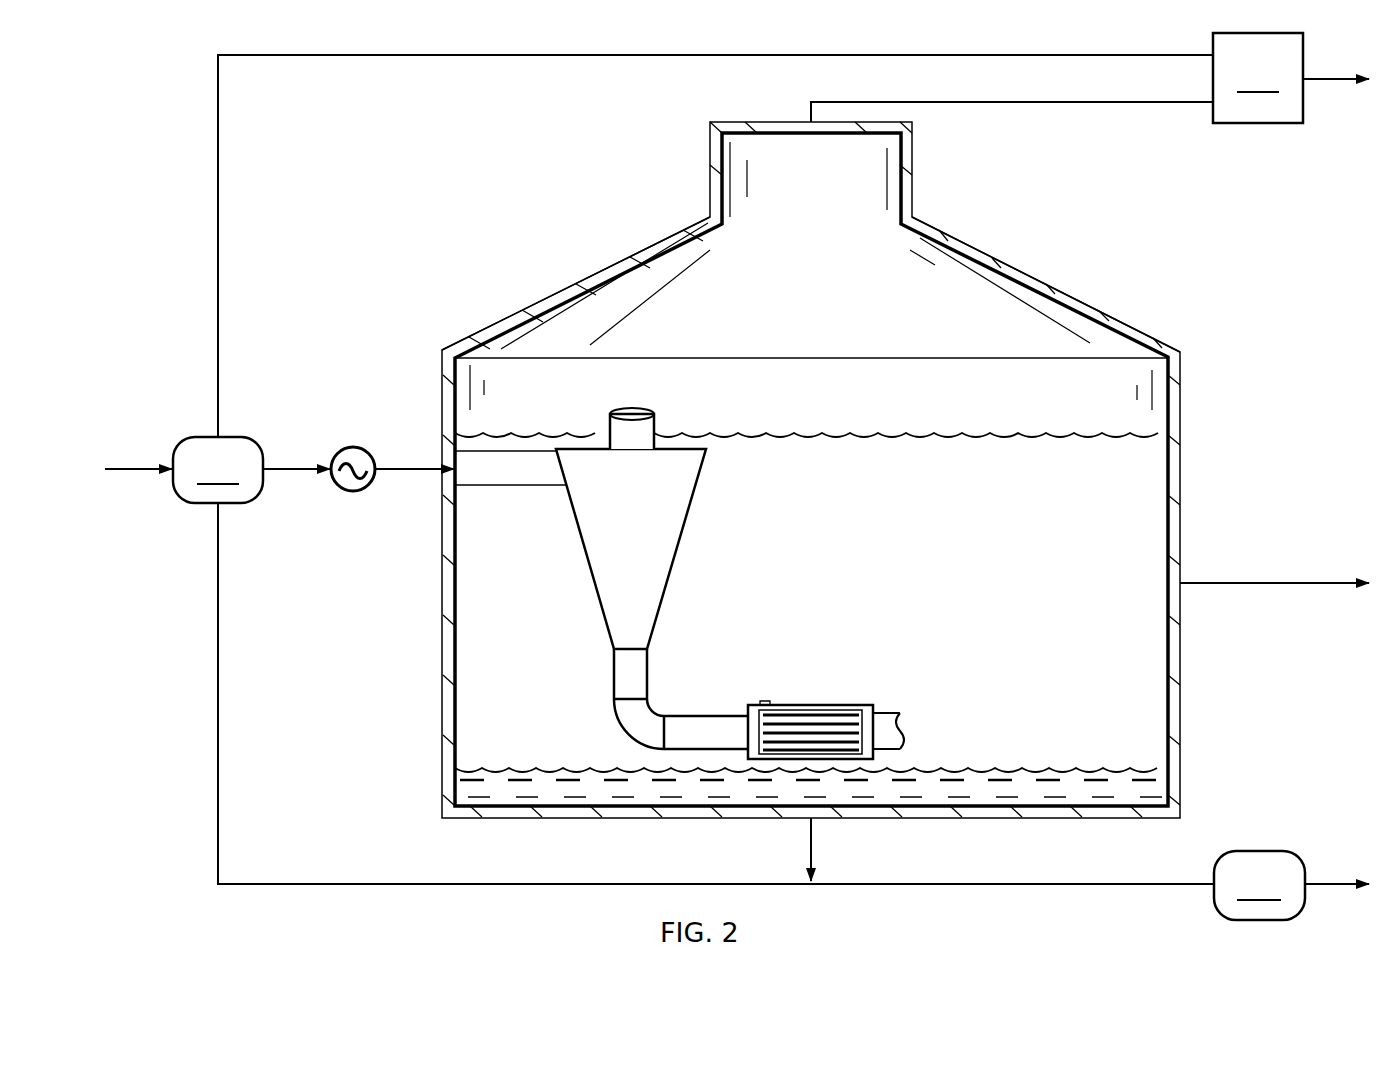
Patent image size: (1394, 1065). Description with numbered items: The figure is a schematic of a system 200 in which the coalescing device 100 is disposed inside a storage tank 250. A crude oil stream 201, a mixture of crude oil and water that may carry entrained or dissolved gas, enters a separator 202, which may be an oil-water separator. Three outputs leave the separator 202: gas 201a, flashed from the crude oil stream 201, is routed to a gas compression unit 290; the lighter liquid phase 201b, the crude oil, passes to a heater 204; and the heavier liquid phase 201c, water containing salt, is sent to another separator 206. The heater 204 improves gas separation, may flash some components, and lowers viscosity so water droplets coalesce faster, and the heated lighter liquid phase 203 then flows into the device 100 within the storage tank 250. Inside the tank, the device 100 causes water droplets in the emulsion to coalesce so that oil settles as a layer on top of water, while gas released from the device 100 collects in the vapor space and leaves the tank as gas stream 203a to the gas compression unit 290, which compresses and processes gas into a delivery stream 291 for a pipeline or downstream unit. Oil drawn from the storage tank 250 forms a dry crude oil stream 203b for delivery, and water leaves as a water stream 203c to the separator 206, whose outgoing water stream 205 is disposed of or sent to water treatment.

The device 100 is at (812, 395).
The system 200 is at (182, 99).
The crude oil stream 201 is at (130, 471).
The gas 201a is at (216, 247).
The lighter liquid phase 201b is at (297, 472).
The heavier liquid phase 201c is at (216, 698).
The separator 202 is at (218, 470).
The heated lighter liquid phase 203 is at (400, 472).
The vapor outlet stream 203a is at (808, 108).
The dry crude oil stream 203b is at (1267, 585).
The water stream 203c is at (808, 843).
The heater 204 is at (353, 447).
The water stream 205 is at (1328, 888).
The separator 206 is at (1259, 885).
The storage tank 250 is at (1045, 286).
The gas compression unit 290 is at (1258, 78).
The condenser outlet 291 is at (1328, 72).